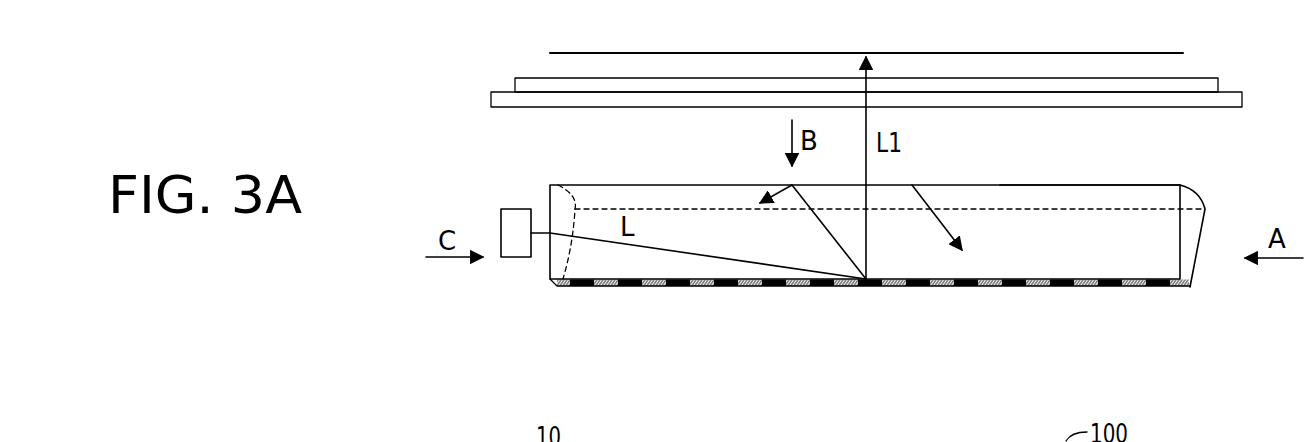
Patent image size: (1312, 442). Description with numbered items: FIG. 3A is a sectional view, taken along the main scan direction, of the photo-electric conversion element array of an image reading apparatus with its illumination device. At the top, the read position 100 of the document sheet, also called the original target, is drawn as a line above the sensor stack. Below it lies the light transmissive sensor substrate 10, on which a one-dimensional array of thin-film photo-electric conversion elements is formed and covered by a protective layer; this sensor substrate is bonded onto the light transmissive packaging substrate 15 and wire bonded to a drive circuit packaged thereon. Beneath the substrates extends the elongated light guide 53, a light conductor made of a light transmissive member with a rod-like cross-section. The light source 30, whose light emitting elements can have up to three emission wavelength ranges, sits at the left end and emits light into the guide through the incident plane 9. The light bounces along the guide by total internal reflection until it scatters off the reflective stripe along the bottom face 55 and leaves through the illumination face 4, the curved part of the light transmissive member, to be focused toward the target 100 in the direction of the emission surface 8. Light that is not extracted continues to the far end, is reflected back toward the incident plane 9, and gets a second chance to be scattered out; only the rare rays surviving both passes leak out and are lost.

The read position 100 is at (556, 53).
The light transmissive sensor substrate 10 is at (515, 84).
The light transmissive packaging substrate 15 is at (491, 99).
The illumination face 4 is at (657, 190).
The incident plane 9 is at (550, 198).
The light emission surface 8 is at (1126, 185).
The light guide 53 is at (1192, 166).
The reflective pattern / light scattering portion 55 is at (1080, 288).
The light source 30 is at (517, 258).